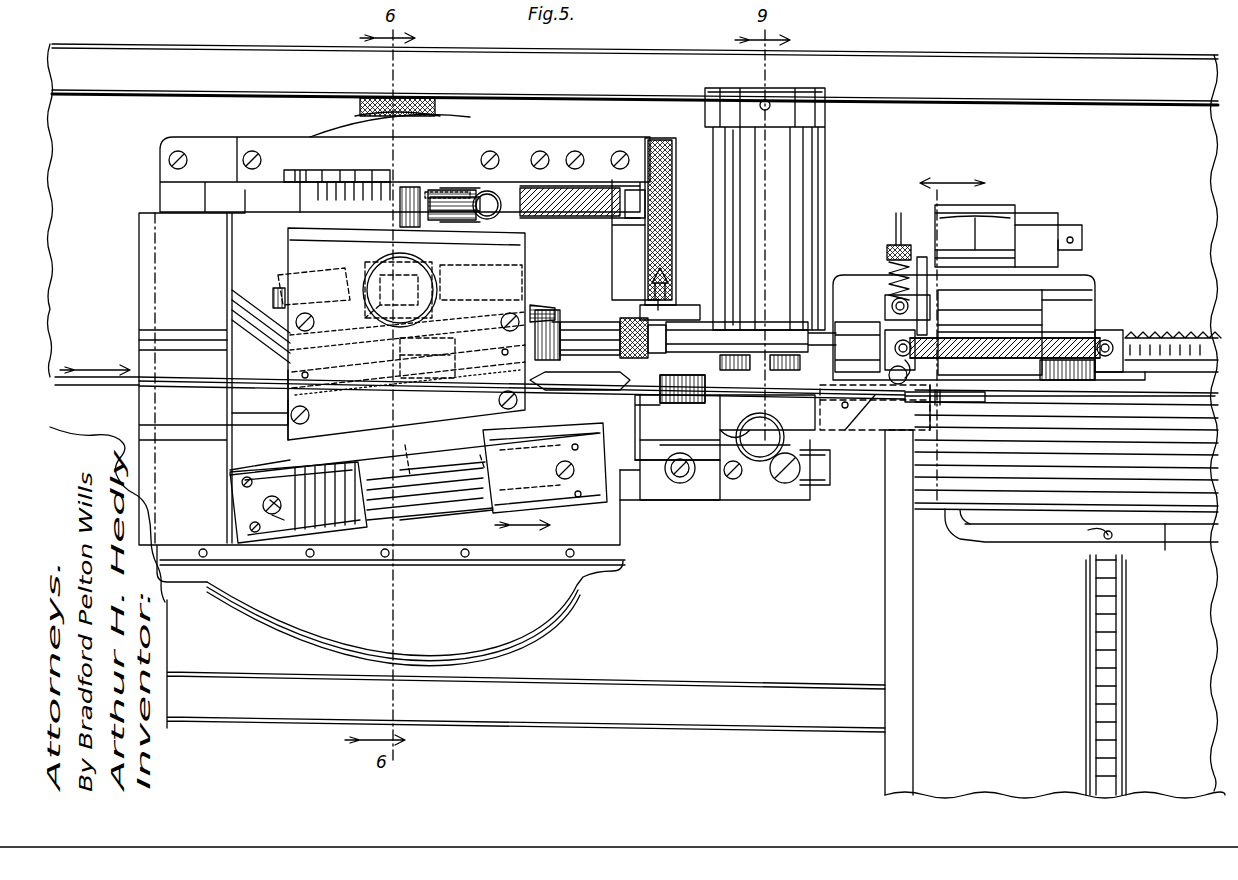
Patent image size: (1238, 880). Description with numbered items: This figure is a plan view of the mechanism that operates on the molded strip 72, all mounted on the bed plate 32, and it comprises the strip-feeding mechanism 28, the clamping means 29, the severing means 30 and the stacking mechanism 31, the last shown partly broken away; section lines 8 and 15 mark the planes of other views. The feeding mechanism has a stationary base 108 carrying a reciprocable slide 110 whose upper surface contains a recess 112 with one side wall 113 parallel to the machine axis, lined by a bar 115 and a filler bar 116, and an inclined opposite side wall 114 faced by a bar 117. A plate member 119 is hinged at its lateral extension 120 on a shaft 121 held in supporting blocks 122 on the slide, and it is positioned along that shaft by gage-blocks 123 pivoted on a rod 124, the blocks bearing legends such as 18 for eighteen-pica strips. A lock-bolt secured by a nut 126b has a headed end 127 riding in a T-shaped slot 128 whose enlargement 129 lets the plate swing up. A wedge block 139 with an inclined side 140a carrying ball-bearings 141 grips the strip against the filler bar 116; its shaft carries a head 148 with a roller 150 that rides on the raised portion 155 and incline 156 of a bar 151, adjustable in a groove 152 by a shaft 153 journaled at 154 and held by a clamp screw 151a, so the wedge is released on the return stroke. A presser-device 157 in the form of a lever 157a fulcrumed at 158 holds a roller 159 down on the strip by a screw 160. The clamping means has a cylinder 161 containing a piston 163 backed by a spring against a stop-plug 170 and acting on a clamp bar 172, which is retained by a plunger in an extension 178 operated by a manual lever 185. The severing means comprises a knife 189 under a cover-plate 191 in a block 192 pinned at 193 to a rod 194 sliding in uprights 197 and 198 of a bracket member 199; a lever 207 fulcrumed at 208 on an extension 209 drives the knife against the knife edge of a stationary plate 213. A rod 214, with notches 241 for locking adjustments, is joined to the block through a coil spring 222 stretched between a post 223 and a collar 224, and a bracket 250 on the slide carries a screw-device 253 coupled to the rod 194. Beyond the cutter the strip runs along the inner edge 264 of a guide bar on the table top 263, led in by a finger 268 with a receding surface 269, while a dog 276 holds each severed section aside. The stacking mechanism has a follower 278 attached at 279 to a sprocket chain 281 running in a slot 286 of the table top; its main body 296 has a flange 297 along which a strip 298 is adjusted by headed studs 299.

The section line 8- 8 is at (522, 534).
The shaft 15 is at (552, 358).
The gage block legend 18 is at (508, 477).
The strip-feeding mechanism 28 is at (303, 145).
The clamping means 29 is at (837, 169).
The severing means 30 is at (893, 223).
The stacking mechanism 31 is at (1184, 530).
The bed plate 32 is at (1045, 45).
The molded strip 72 is at (520, 289).
The base 108 is at (540, 605).
The slide 110 is at (240, 300).
The recess 112 is at (240, 355).
The side wall 113 is at (258, 427).
The side wall 114 is at (252, 335).
The bar 115 is at (240, 413).
The filler bar 116 is at (235, 395).
The bar 117 is at (545, 320).
The plate member 119 is at (495, 250).
The lateral extension 120 is at (395, 490).
The shaft 121 is at (458, 460).
The supporting blocks 122 is at (265, 545).
The gage-blocks 123 is at (340, 525).
The rod 124 is at (470, 505).
The nut 126b is at (481, 281).
The headed end 127 is at (470, 240).
The slot 128 is at (292, 283).
The enlargement 129 is at (423, 290).
The wedge block 139 is at (455, 365).
The inclined side 140a is at (426, 361).
The ball-bearings 141 is at (408, 370).
The cylindrical head 148 is at (410, 185).
The roller 150 is at (420, 192).
The bar 151 is at (275, 215).
The clamp screw 151a is at (380, 100).
The groove 152 is at (175, 190).
The shaft 153 is at (525, 188).
The journal 154 is at (628, 190).
The raised portion 155 is at (335, 210).
The incline 156 is at (415, 205).
The presser-device 157 is at (730, 428).
The lever 157a is at (775, 460).
The fulcrum 158 is at (795, 480).
The roller 159 is at (672, 405).
The screw 160 is at (760, 437).
The cylinder 161 is at (815, 140).
The piston 163 is at (751, 346).
The stop-plug 170 is at (790, 100).
The clamp bar 172 is at (646, 338).
The extension 178 is at (695, 310).
The manually operated lever 185 is at (680, 273).
The knife 189 is at (920, 258).
The cover-plate 191 is at (925, 320).
The block 192 is at (925, 300).
The pin 193 is at (925, 375).
The rod 194 is at (875, 300).
The upright 197 is at (878, 305).
The upright 198 is at (1072, 332).
The bracket member 199 is at (1018, 282).
The lever 207 is at (1003, 210).
The fulcrum 208 is at (1080, 235).
The extension 209 is at (1048, 220).
The stationary plate 213 is at (840, 420).
The rod 214 is at (1200, 300).
The coil spring 222 is at (1012, 345).
The post 223 is at (898, 345).
The collar 224 is at (1108, 340).
The notches 241 is at (1168, 330).
The bracket 250 is at (540, 368).
The screw-device 253 is at (630, 290).
The table top 263 is at (910, 586).
The inner edge 264 is at (1205, 395).
The finger 268 is at (1120, 376).
The receding surface 269 is at (1055, 388).
The dog 276 is at (955, 400).
The follower device 278 is at (985, 545).
The connection 279 is at (1090, 530).
The sprocket chain 281 is at (1095, 592).
The slot 286 is at (1092, 634).
The main body portion 296 is at (1130, 542).
The flange-portion 297 is at (1190, 545).
The strip 298 is at (975, 515).
The headed studs 299 is at (1050, 540).